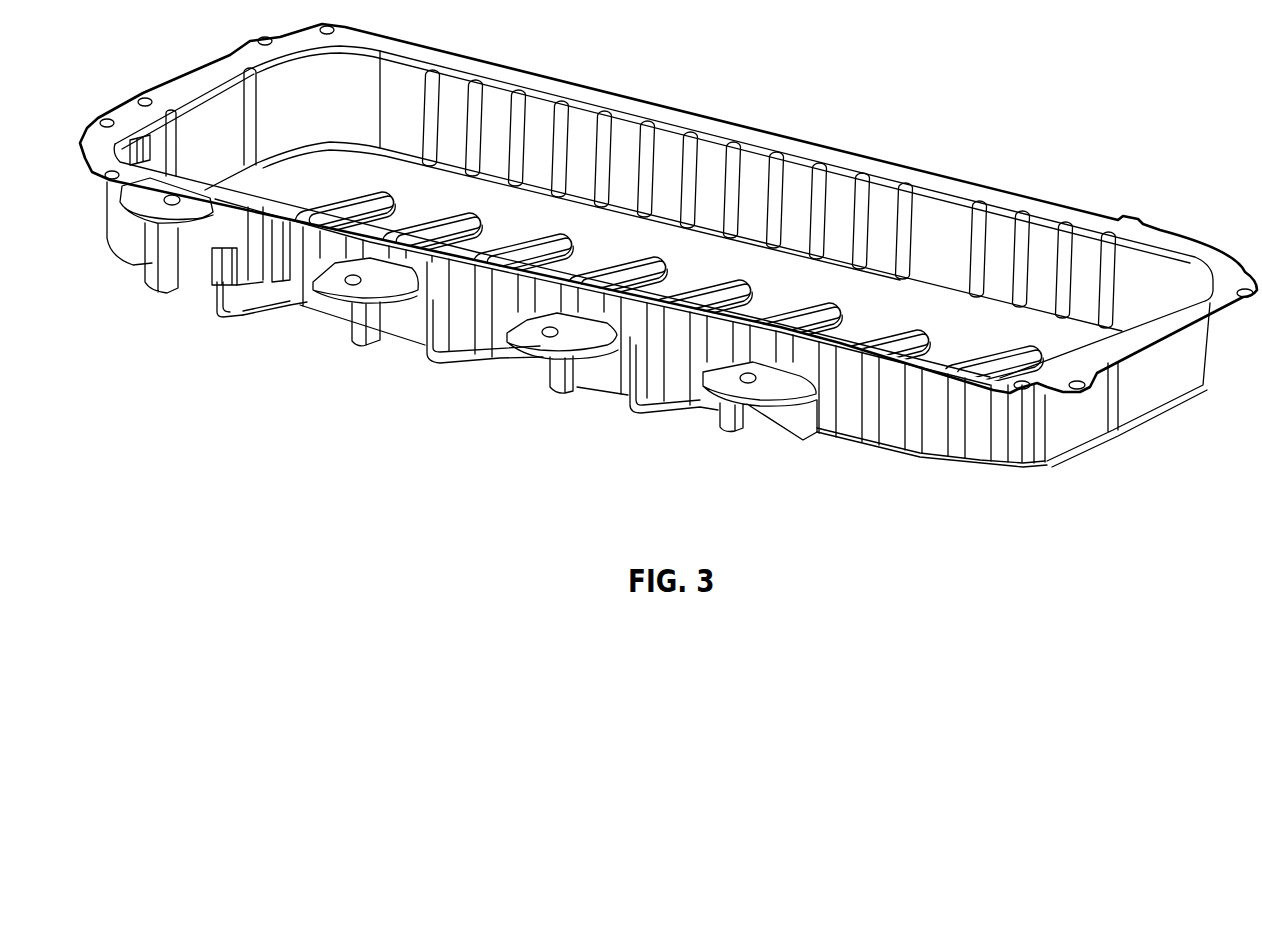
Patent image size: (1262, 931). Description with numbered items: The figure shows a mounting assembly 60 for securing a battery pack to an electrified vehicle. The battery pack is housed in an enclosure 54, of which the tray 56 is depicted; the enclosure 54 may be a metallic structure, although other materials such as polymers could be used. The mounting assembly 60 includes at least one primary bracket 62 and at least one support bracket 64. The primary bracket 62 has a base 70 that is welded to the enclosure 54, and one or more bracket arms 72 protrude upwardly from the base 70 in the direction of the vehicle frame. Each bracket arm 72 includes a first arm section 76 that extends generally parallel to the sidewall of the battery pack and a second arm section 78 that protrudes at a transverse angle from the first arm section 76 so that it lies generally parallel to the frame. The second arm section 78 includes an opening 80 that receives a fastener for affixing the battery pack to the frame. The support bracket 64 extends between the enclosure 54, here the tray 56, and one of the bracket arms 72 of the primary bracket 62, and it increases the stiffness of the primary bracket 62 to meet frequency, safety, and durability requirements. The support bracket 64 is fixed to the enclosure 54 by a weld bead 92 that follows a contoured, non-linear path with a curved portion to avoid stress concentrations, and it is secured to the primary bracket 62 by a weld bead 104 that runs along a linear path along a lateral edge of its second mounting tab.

The enclosure 54 is at (668, 245).
The tray 56 is at (977, 437).
The mounting assembly 60 is at (251, 318).
The primary bracket 62 is at (370, 286).
The support bracket 64 is at (259, 246).
The base 70 is at (260, 315).
The bracket arm 72 is at (175, 232).
The first arm section 76 is at (412, 347).
The second arm section 78 is at (397, 330).
The opening 80 is at (352, 277).
The weld bead 92 is at (285, 255).
The weld bead 104 is at (213, 262).